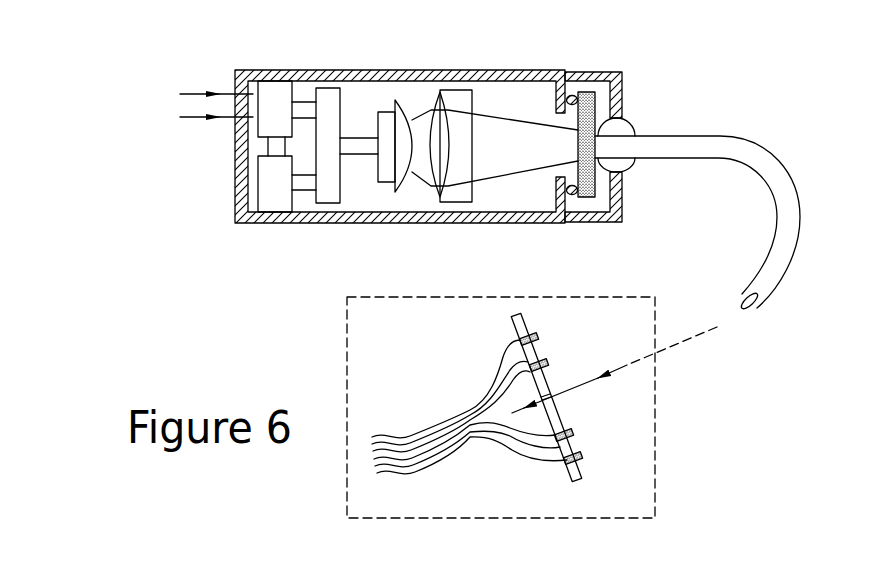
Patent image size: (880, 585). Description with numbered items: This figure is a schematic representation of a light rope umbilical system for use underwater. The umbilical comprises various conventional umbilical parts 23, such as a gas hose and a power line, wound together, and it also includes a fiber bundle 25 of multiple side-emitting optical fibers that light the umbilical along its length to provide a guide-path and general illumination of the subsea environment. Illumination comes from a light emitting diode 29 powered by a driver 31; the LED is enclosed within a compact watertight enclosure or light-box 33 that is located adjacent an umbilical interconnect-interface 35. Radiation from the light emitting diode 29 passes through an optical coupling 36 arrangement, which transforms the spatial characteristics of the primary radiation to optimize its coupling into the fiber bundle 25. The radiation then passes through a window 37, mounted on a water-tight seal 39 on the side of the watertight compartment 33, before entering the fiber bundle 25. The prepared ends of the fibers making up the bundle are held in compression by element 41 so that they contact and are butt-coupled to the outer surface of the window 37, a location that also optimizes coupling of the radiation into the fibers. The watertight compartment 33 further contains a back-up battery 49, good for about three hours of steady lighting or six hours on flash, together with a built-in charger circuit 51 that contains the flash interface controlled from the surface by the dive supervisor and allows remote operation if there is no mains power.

The umbilical parts 23 is at (435, 442).
The fiber bundle 25 is at (705, 147).
The light emitting diode 29 is at (385, 123).
The driver 31 is at (328, 193).
The light-box 33 is at (480, 70).
The umbilical interconnect-interface 35 is at (575, 477).
The optical coupling arrangement 36 is at (460, 195).
The window 37 is at (588, 108).
The water-tight seal 39 is at (572, 96).
The compression element 41 is at (625, 190).
The back-up battery 49 is at (275, 193).
The charger circuit 51 is at (275, 102).